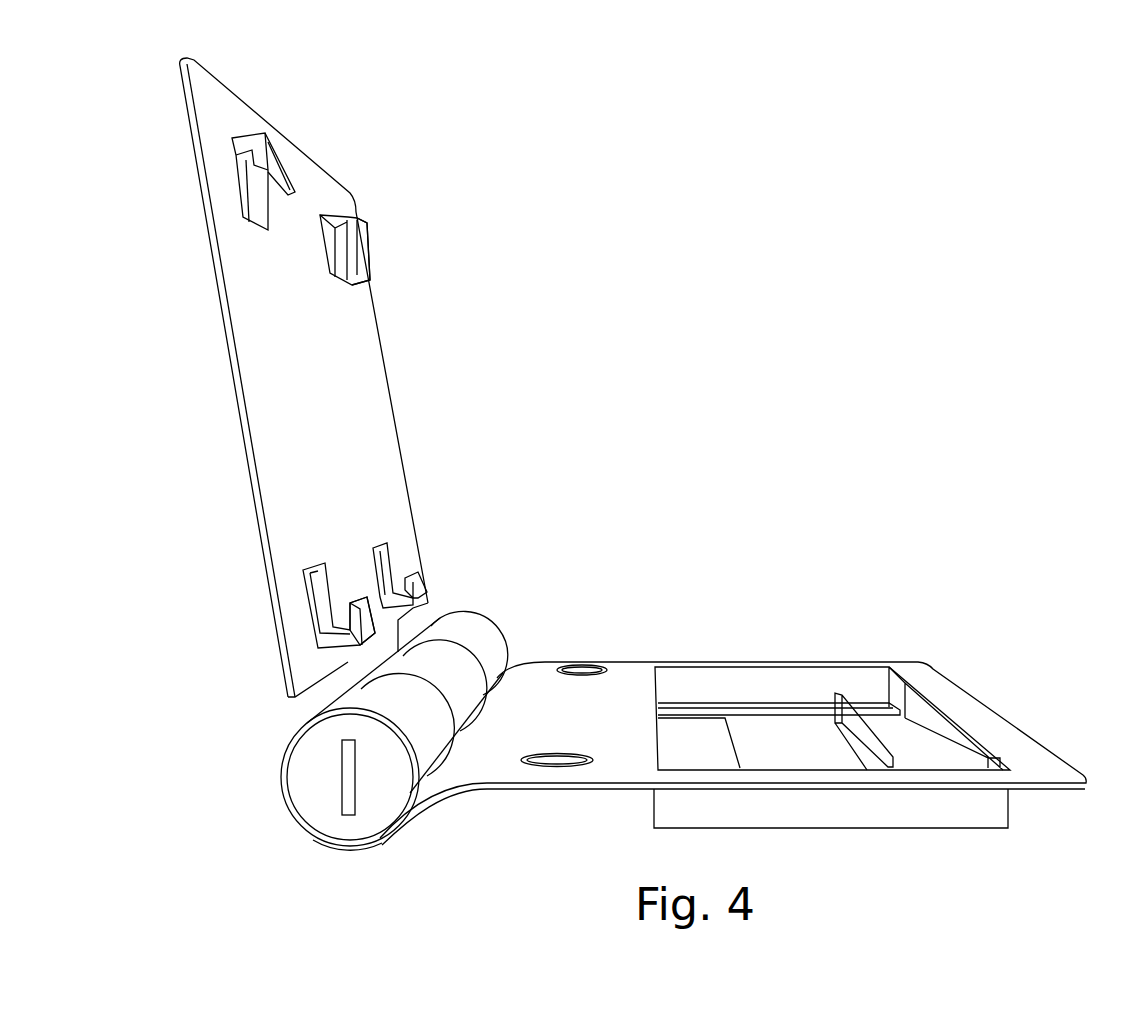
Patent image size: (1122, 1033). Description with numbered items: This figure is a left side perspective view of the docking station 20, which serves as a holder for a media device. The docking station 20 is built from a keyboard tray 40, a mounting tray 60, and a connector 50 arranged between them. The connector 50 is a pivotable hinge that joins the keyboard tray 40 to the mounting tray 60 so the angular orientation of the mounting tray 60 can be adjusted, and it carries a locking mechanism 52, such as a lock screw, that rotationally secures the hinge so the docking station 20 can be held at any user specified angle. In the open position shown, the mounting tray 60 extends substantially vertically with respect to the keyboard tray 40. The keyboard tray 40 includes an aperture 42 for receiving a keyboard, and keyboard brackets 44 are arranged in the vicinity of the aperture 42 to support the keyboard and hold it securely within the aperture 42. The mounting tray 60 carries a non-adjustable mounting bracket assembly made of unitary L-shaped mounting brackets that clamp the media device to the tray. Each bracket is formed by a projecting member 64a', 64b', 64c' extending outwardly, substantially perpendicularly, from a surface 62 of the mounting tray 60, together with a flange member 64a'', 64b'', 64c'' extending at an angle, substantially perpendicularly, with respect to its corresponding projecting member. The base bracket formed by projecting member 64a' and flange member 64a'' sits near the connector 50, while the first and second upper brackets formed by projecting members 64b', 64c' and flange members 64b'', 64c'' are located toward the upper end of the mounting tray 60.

The docking station 20 is at (625, 143).
The keyboard tray 40 is at (912, 668).
The aperture 42 is at (680, 663).
The keyboard brackets 44 is at (890, 733).
The connector 50 is at (380, 703).
The locking mechanism 52 is at (342, 775).
The mounting tray 60 is at (368, 380).
The surface 62 is at (328, 373).
The projecting member 64a' is at (365, 602).
The flange member 64a'' is at (358, 585).
The projecting member 64b' is at (269, 141).
The flange member 64b'' is at (330, 154).
The projecting member 64c' is at (361, 224).
The flange member 64c'' is at (415, 251).